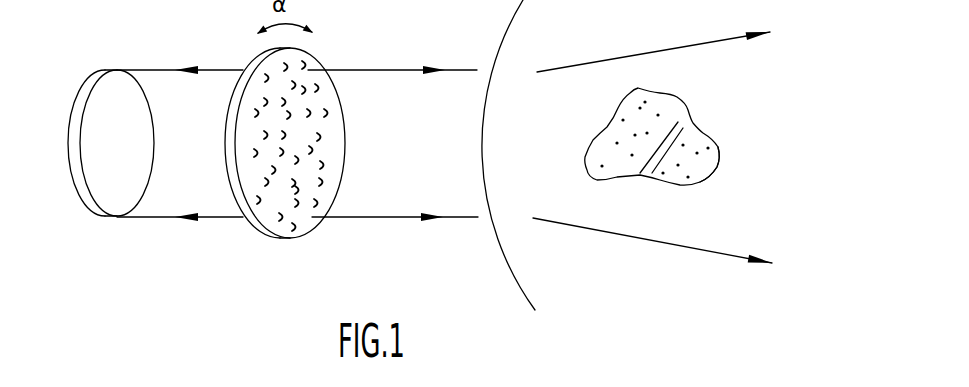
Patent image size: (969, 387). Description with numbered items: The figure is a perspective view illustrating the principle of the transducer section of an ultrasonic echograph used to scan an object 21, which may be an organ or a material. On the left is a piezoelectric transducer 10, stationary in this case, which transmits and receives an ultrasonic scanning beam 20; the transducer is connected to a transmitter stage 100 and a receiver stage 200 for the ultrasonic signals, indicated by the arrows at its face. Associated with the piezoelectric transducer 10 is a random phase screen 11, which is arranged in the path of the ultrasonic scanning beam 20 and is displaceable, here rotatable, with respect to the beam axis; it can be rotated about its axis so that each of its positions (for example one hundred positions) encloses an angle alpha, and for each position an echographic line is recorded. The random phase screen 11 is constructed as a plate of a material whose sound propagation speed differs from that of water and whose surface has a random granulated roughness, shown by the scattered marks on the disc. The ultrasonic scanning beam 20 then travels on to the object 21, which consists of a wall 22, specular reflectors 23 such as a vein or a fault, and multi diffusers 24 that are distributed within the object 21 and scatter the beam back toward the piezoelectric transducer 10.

The piezoelectric transducer 10 is at (105, 183).
The random phase screen 11 is at (307, 214).
The ultrasonic scanning beam 20 is at (387, 110).
The object 21 is at (678, 110).
The wall 22 is at (722, 147).
The specular reflectors 23 is at (654, 165).
The multi diffusers 24 is at (632, 155).
The transmitter stage 100 is at (70, 108).
The receiver stage 200 is at (70, 168).